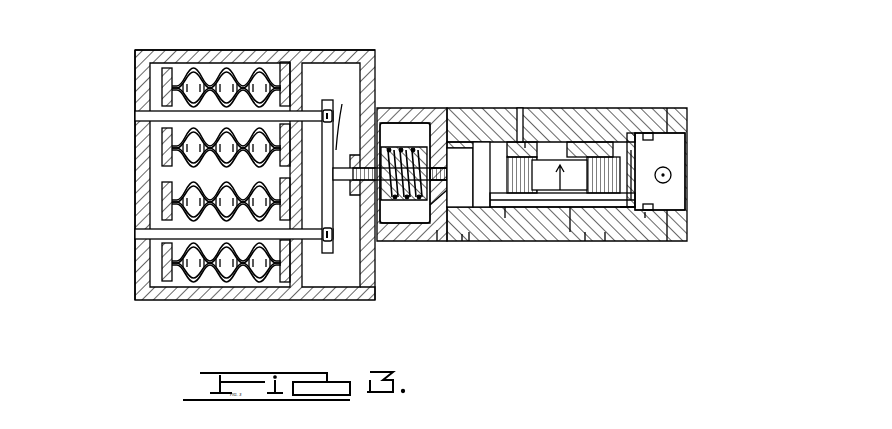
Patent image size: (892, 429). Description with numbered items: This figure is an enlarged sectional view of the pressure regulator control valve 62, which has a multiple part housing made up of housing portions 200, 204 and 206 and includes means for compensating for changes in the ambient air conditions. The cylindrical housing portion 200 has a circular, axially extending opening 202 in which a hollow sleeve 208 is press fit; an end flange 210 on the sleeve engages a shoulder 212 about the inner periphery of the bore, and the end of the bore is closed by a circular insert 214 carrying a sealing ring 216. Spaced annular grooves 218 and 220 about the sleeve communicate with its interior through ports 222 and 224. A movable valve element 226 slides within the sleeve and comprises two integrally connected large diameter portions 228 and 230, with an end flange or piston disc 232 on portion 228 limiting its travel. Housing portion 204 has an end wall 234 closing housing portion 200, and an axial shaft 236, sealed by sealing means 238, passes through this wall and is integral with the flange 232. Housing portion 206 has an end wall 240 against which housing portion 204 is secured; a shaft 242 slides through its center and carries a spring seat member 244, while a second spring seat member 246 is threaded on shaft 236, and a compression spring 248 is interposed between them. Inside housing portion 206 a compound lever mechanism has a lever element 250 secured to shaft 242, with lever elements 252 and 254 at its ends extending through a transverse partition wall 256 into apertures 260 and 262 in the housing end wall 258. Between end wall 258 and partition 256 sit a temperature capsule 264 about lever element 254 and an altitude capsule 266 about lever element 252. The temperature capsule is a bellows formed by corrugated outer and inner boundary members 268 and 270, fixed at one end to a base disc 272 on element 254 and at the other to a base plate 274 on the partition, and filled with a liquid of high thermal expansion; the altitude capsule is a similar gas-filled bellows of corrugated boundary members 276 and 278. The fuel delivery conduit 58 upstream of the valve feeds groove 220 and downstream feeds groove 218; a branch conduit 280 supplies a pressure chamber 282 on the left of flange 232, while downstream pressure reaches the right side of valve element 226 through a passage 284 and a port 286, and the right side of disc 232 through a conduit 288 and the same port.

The fluid delivery conduit 58 is at (525, 142).
The valve 62 is at (462, 243).
The housing portion 200 is at (688, 235).
The opening 202 is at (472, 252).
The housing portion 204 is at (405, 243).
The housing portion 206 is at (270, 300).
The hollow sleeve 208 is at (568, 150).
The end flange 210 is at (636, 208).
The shoulder 212 is at (645, 215).
The circular insert 214 is at (665, 195).
The sealing ring 216 is at (688, 110).
The annular groove 218 is at (520, 140).
The annular groove 220 is at (612, 150).
The port 222 is at (545, 150).
The port 224 is at (648, 133).
The movable valve element 226 is at (542, 208).
The large diameter portion 228 is at (483, 130).
The large diameter portion 230 is at (634, 168).
The end flange 232 is at (473, 148).
The end wall 234 is at (445, 140).
The shaft 236 is at (430, 203).
The sealing means 238 is at (432, 150).
The end wall 240 is at (375, 298).
The shaft 242 is at (343, 116).
The spring seat member 244 is at (358, 195).
The second spring seat member 246 is at (393, 123).
The compression spring 248 is at (403, 161).
The lever element 250 is at (332, 243).
The lever element 252 is at (315, 268).
The lever element 254 is at (325, 100).
The partition wall 256 is at (305, 63).
The housing end wall 258 is at (135, 70).
The aperture 260 is at (135, 235).
The aperture 262 is at (135, 117).
The temperature capsule 264 is at (212, 64).
The altitude capsule 266 is at (182, 282).
The outer boundary member 268 is at (234, 66).
The inner boundary member 270 is at (188, 143).
The base disc 272 is at (165, 88).
The base plate 274 is at (265, 172).
The corrugated boundary member 276 is at (180, 186).
The corrugated boundary member 278 is at (175, 207).
The branch conduit 280 is at (437, 243).
The pressure chamber 282 is at (481, 142).
The passage 284 is at (605, 241).
The port 286 is at (570, 232).
The conduit 288 is at (505, 218).